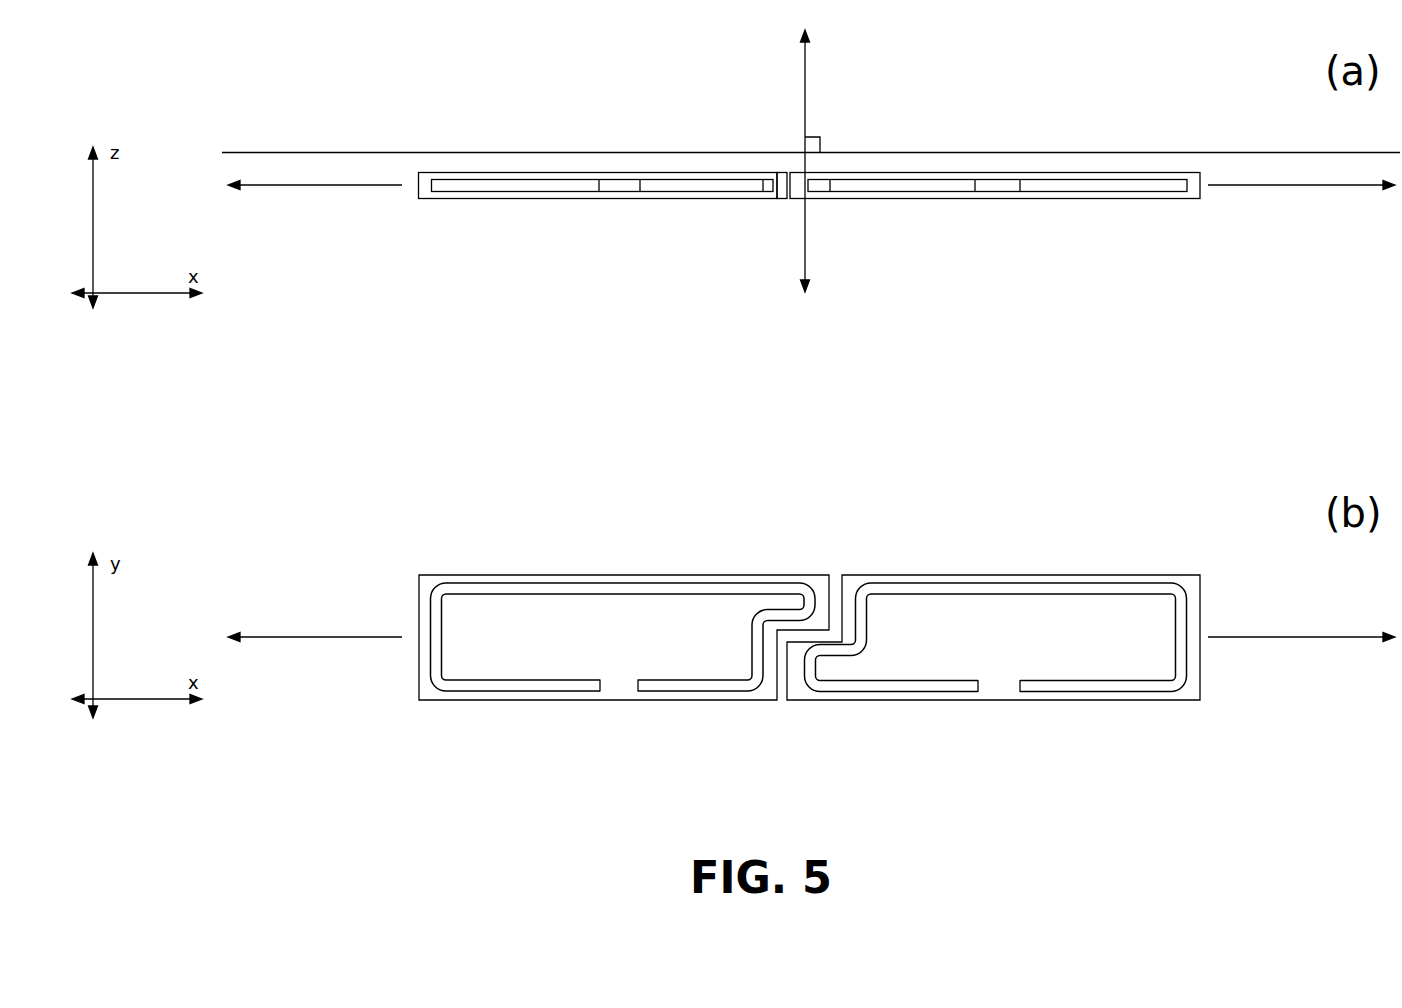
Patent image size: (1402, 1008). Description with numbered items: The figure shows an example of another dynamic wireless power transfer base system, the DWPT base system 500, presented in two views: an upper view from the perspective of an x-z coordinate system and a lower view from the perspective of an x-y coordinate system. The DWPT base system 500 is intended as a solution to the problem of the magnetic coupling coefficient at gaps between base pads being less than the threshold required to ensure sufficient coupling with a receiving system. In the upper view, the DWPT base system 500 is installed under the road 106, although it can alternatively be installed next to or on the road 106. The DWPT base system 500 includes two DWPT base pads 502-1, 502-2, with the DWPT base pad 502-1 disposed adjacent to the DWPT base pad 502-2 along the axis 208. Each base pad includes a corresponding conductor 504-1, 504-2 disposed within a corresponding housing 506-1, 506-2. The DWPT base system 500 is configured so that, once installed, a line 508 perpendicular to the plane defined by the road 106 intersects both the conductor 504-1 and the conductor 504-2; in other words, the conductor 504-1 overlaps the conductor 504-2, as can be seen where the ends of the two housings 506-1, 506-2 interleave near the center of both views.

The DWPT base system 500 is at (149, 72).
The road 106 is at (284, 151).
The axis 208 is at (286, 187).
The line 508 is at (807, 70).
The DWPT base pad 502-1 is at (606, 487).
The DWPT base pad 502-2 is at (1037, 472).
The conductor 504-1 is at (490, 192).
The conductor 504-2 is at (937, 192).
The housing 506-1 is at (707, 199).
The housing 506-2 is at (1190, 192).